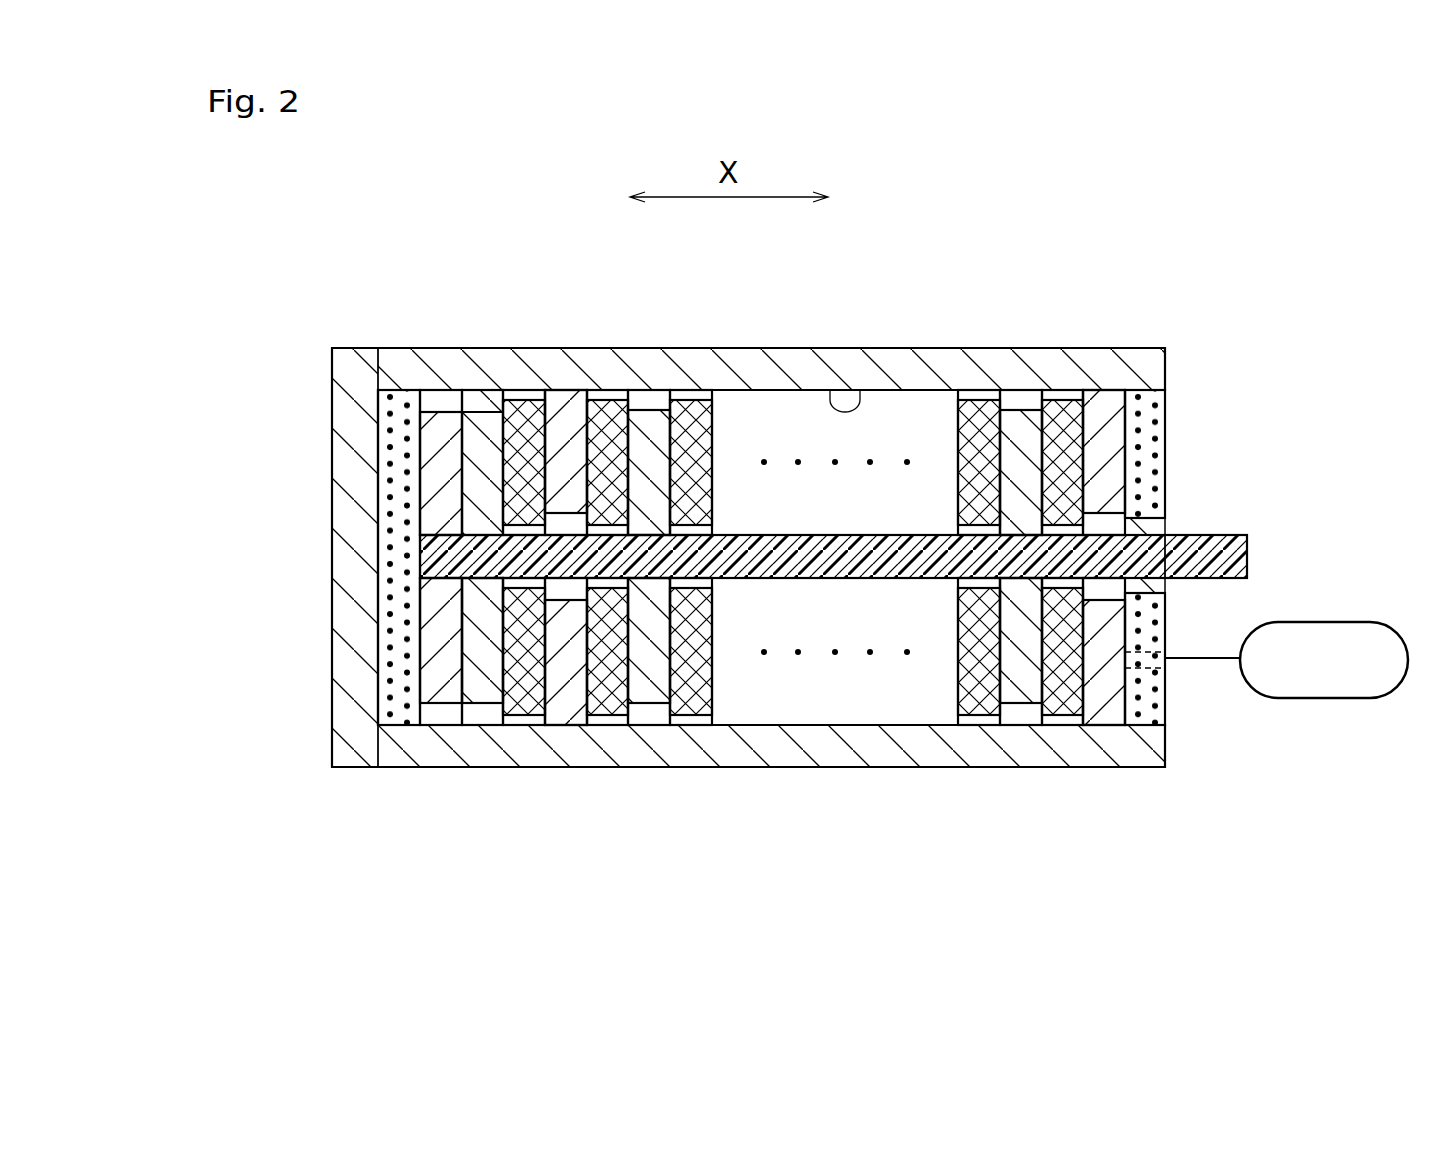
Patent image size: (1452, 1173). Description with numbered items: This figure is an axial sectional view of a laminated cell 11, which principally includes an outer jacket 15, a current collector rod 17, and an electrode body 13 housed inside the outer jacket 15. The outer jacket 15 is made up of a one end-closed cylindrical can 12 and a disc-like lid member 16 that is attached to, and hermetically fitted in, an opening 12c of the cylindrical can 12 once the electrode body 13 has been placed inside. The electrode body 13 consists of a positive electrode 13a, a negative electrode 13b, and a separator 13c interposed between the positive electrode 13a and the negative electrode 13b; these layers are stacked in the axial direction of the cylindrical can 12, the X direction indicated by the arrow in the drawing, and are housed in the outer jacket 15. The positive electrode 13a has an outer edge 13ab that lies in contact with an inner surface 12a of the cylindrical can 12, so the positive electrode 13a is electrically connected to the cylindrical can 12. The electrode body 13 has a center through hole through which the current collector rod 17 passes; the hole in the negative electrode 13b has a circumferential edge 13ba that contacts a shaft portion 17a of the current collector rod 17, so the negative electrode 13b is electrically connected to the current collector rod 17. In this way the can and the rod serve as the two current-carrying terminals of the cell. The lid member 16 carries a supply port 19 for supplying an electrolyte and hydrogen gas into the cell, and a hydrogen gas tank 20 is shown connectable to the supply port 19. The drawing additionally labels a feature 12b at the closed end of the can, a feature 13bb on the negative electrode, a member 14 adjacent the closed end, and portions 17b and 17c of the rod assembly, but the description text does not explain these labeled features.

The laminated cell 11 is at (988, 267).
The cylindrical can 12 is at (1057, 363).
The inner surface of the cylindrical can 12a is at (830, 390).
The left end wall of housing 12b is at (378, 473).
The opening of the cylindrical can 12c is at (1145, 390).
The electrode body 13 is at (745, 903).
The positive electrode 13a is at (565, 713).
The negative electrode 13b is at (647, 713).
The separator 13c is at (608, 713).
The outer edge of the positive electrode 13ab is at (1108, 727).
The circumferential edge of the negative electrode hole 13ba is at (965, 595).
The side surface of second magnet 13bb is at (1012, 703).
The left bearing member 14 is at (402, 407).
The outer jacket 15 is at (1267, 212).
The lid member 16 is at (1167, 405).
The current collector rod 17 is at (842, 553).
The shaft portion of the current collector rod 17a is at (735, 533).
The coil block 17b is at (442, 427).
The shaft protruding portion 17c is at (1213, 533).
The supply port 19 is at (1168, 665).
The hydrogen gas tank 20 is at (1340, 622).